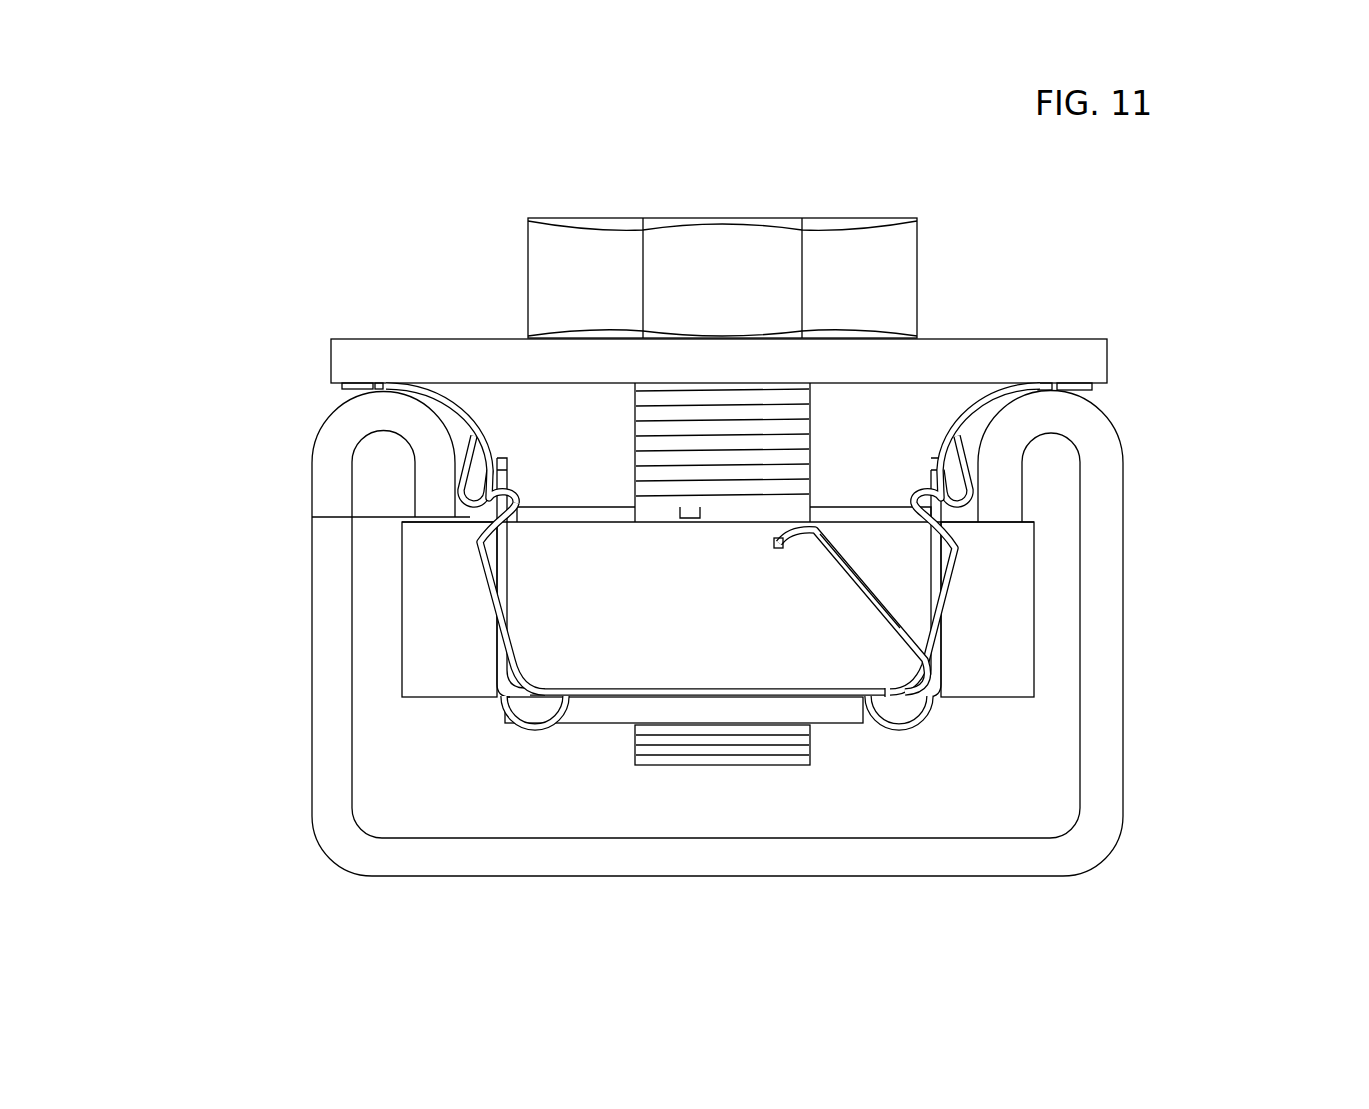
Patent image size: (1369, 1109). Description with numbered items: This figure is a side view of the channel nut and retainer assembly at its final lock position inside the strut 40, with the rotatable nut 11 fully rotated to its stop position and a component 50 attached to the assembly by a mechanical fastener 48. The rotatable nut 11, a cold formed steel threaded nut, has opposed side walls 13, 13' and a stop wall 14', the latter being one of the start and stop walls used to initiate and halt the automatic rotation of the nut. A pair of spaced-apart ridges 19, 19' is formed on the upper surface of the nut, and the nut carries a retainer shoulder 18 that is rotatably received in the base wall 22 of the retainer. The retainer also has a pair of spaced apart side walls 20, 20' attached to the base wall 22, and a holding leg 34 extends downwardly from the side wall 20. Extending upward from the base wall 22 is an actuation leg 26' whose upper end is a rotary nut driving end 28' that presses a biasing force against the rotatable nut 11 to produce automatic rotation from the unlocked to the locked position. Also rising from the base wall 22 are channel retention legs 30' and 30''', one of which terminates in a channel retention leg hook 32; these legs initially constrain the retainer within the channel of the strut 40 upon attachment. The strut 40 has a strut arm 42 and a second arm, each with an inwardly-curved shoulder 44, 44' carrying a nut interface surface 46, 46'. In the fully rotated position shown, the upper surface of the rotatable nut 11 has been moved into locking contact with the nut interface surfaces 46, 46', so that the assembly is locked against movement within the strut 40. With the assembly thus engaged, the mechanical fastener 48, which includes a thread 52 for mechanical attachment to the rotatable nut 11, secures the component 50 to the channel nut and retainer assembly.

The rotatable nut 11 is at (773, 648).
The side wall 13 is at (393, 727).
The side wall 13' is at (1102, 609).
The stop wall 14' is at (895, 699).
The retainer shoulder 18 is at (650, 692).
The ridge 19 is at (718, 479).
The ridge 19' is at (870, 465).
The side wall 20 is at (363, 320).
The side wall 20' is at (1076, 328).
The base wall 22 is at (588, 705).
The actuation leg 26' is at (1053, 556).
The rotary nut driving end 28' is at (1059, 548).
The channel retention leg 30' is at (389, 668).
The channel retention leg 30''' is at (1013, 648).
The channel retention leg hook 32 is at (335, 516).
The holding leg 34 is at (468, 463).
The strut 40 is at (318, 630).
The strut arm 42 is at (330, 483).
The inwardly-curved shoulder 44 is at (334, 408).
The inwardly-curved shoulder 44' is at (1149, 449).
The nut interface surface 46 is at (303, 533).
The nut interface surface 46' is at (1092, 478).
The mechanical fastener 48 is at (900, 290).
The component 50 is at (1090, 355).
The thread 52 is at (692, 766).